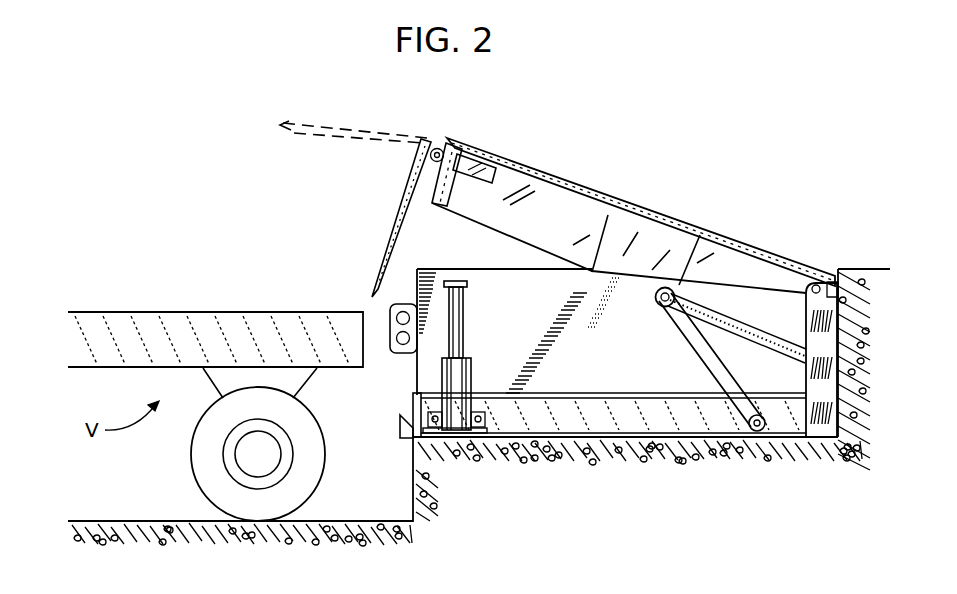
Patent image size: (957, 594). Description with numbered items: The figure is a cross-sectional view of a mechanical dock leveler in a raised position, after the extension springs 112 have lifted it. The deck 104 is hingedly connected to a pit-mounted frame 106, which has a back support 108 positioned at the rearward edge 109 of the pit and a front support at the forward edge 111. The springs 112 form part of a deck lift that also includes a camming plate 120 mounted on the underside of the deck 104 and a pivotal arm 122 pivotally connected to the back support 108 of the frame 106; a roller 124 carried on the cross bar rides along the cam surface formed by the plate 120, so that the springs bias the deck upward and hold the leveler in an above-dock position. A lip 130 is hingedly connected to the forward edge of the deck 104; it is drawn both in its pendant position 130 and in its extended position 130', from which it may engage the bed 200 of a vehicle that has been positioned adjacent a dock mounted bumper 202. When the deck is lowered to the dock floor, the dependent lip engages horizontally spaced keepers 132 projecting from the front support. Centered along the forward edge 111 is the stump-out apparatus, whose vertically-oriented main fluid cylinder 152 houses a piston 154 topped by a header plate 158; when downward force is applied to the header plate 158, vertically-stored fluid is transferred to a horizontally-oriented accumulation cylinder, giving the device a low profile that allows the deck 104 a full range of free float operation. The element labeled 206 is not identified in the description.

The deck 104 is at (530, 168).
The pit-mounted frame 106 is at (620, 393).
The back support 108 is at (805, 312).
The rearward edge 109 is at (820, 450).
The forward edge 111 is at (423, 450).
The extension springs 112 is at (720, 305).
The camming plate 120 is at (655, 238).
The pivotal arm 122 is at (680, 337).
The roller 124 is at (655, 298).
The lip 130 is at (376, 218).
The lip in extended position 130' is at (326, 147).
The keepers 132 is at (398, 433).
The main fluid cylinder 152 is at (472, 377).
The piston 154 is at (465, 326).
The header plate 158 is at (455, 281).
The vehicle bed 200 is at (213, 312).
The dock mounted bumper 202 is at (397, 362).
The sensor housing 206 is at (470, 185).